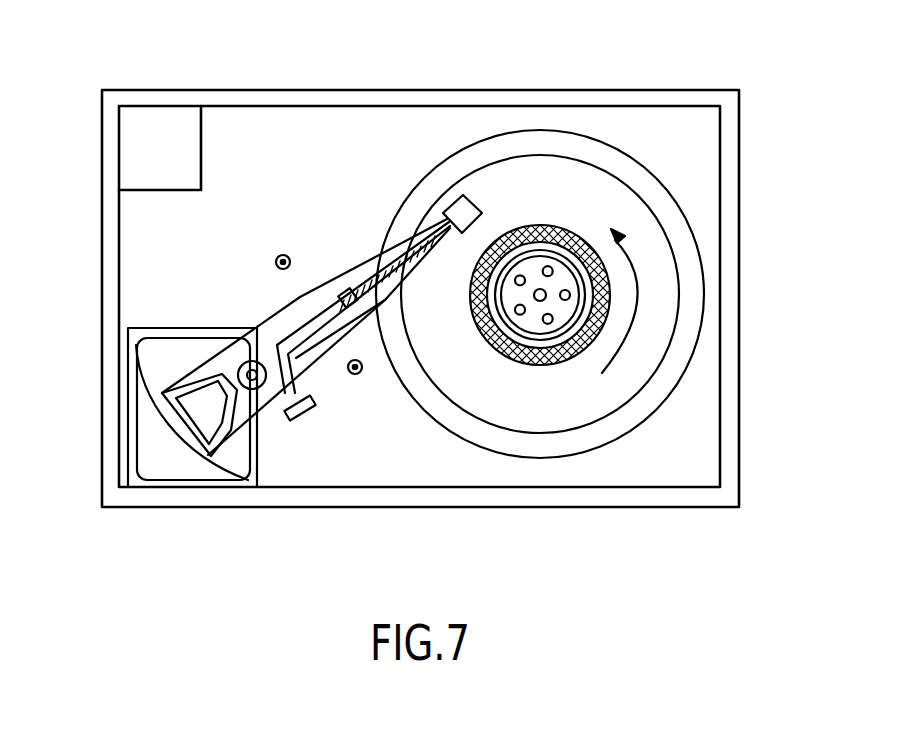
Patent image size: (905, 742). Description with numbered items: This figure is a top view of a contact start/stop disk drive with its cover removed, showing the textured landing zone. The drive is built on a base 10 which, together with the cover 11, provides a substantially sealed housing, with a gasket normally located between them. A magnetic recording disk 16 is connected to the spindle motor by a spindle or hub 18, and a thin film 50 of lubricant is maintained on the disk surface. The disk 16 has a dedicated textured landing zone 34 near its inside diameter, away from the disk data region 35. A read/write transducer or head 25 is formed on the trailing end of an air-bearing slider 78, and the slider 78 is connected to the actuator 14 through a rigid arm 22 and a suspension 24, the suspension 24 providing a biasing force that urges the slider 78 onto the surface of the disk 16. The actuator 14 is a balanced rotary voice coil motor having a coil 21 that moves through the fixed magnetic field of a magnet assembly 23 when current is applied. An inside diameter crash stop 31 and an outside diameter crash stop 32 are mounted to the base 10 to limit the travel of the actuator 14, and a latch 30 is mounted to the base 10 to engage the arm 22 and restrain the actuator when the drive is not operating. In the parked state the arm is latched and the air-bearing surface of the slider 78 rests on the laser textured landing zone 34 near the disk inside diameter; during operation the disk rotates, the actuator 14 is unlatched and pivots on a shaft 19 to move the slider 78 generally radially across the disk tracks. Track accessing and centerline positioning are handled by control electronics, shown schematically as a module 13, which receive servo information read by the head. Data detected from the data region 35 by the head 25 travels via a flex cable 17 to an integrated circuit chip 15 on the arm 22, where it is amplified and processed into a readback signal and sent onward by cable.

The base 10 is at (730, 194).
The cover 11 is at (540, 301).
The control electronics module 13 is at (180, 164).
The actuator 14 is at (160, 477).
The integrated circuit chip 15 is at (342, 292).
The magnetic recording disk 16 is at (683, 372).
The flex cable 17 is at (392, 262).
The spindle or hub 18 is at (570, 280).
The shaft 19 is at (245, 362).
The coil 21 is at (160, 394).
The rigid arm 22 is at (320, 360).
The magnet assembly 23 is at (177, 433).
The suspension 24 is at (445, 238).
The read/write transducer or head 25 is at (452, 232).
The latch 30 is at (294, 424).
The inside diameter crash stop 31 is at (355, 376).
The outside diameter crash stop 32 is at (276, 262).
The textured landing zone 34 is at (608, 320).
The disk data region 35 is at (562, 226).
The thin film of lubricant 50 is at (589, 148).
The air-bearing slider 78 is at (463, 205).